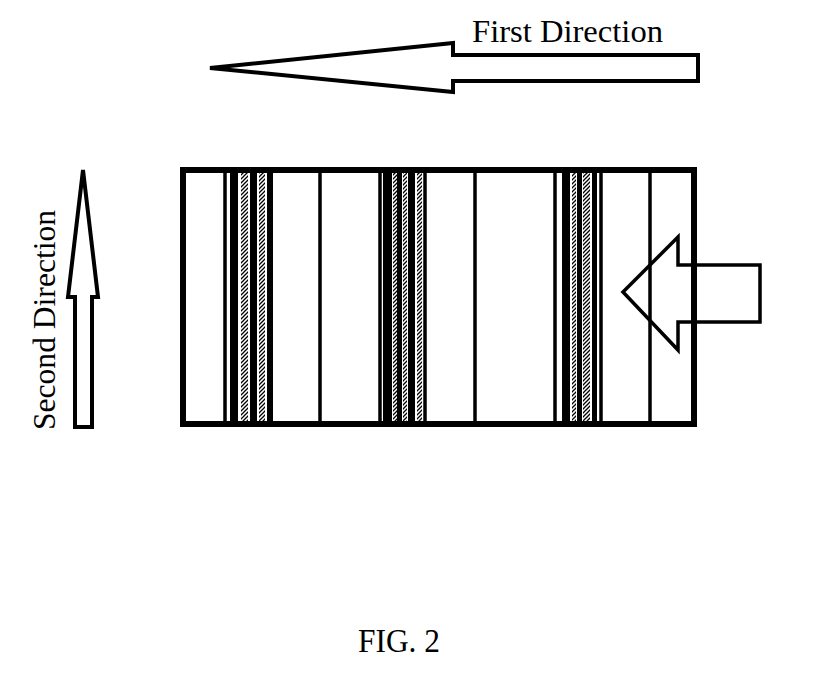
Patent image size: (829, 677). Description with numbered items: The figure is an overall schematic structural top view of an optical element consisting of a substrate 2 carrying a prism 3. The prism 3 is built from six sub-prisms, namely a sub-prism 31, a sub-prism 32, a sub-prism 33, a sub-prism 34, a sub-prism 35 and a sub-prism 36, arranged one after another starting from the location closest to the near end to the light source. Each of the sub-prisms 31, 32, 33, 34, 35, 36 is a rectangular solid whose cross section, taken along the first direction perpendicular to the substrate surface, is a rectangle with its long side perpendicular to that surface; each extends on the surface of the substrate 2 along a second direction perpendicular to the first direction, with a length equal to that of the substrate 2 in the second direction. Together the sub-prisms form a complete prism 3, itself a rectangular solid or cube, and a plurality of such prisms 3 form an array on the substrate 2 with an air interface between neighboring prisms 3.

The substrate 2 is at (203, 197).
The prism 3 is at (397, 356).
The sub-prism 31 is at (452, 428).
The sub-prism 32 is at (423, 428).
The sub-prism 33 is at (410, 428).
The sub-prism 34 is at (402, 428).
The sub-prism 35 is at (396, 428).
The sub-prism 36 is at (392, 428).